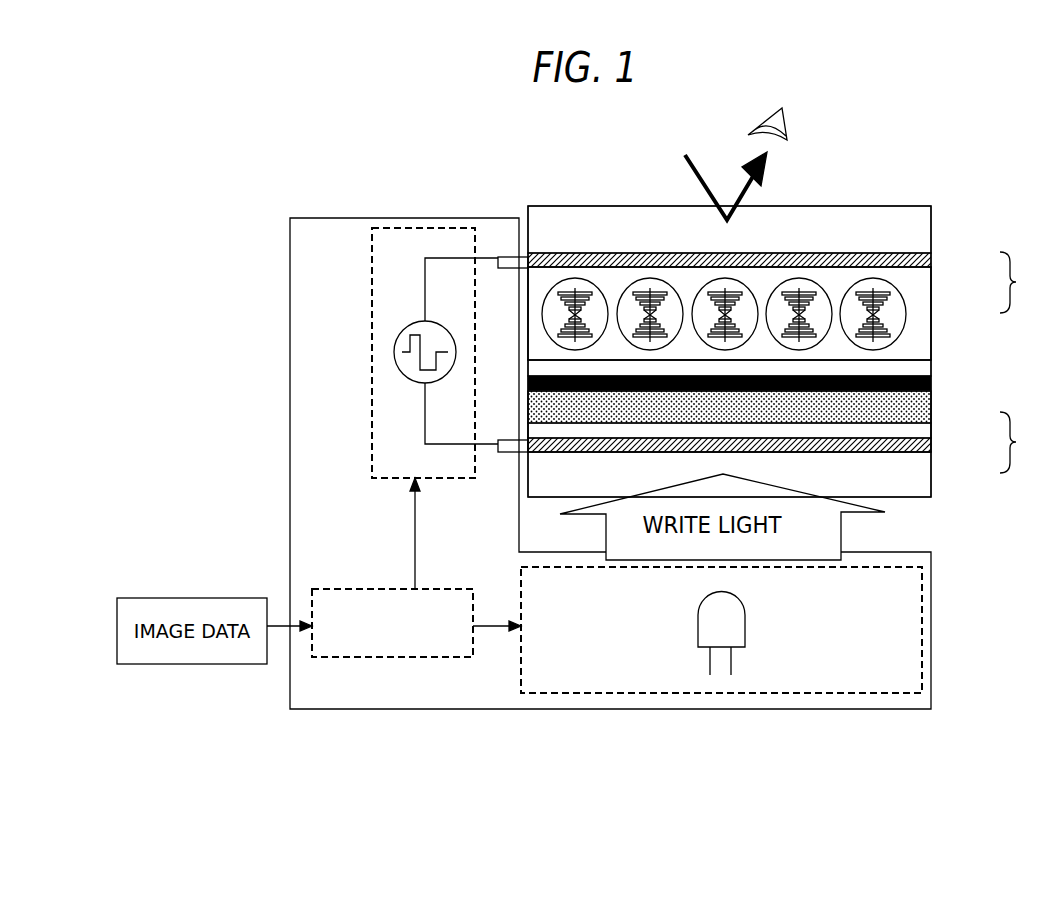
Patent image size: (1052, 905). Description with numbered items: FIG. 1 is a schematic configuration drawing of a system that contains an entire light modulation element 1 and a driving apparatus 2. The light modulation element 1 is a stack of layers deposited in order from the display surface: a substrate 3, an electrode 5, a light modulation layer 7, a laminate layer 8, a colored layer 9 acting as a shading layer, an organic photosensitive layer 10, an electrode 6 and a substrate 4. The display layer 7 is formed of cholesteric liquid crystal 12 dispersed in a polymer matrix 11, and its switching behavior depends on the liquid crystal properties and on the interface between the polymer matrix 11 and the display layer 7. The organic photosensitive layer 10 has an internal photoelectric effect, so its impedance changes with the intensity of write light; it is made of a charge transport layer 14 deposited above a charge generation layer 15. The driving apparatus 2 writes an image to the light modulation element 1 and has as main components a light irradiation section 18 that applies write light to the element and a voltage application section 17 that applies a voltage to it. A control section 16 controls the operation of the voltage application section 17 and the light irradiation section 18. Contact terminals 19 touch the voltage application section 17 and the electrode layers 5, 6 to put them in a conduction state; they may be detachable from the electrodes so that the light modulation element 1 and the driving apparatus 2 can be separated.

The light modulation element 1 is at (871, 178).
The driving apparatus 2 is at (318, 218).
The substrate 3 is at (922, 223).
The substrate 4 is at (927, 478).
The electrode 5 is at (930, 258).
The electrode 6 is at (928, 448).
The light modulation layer 7 is at (781, 306).
The laminate layer 8 is at (920, 368).
The colored layer 9 is at (930, 383).
The organic photosensitive layer 10 is at (787, 432).
The polymer matrix 11 is at (920, 292).
The cholesteric liquid crystal 12 is at (893, 318).
The charge transport layer 14 is at (928, 410).
The charge generation layer 15 is at (927, 430).
The control section 16 is at (355, 589).
The voltage application section 17 is at (372, 378).
The light irradiation section 18 is at (762, 693).
The contact terminal 19 is at (505, 262).